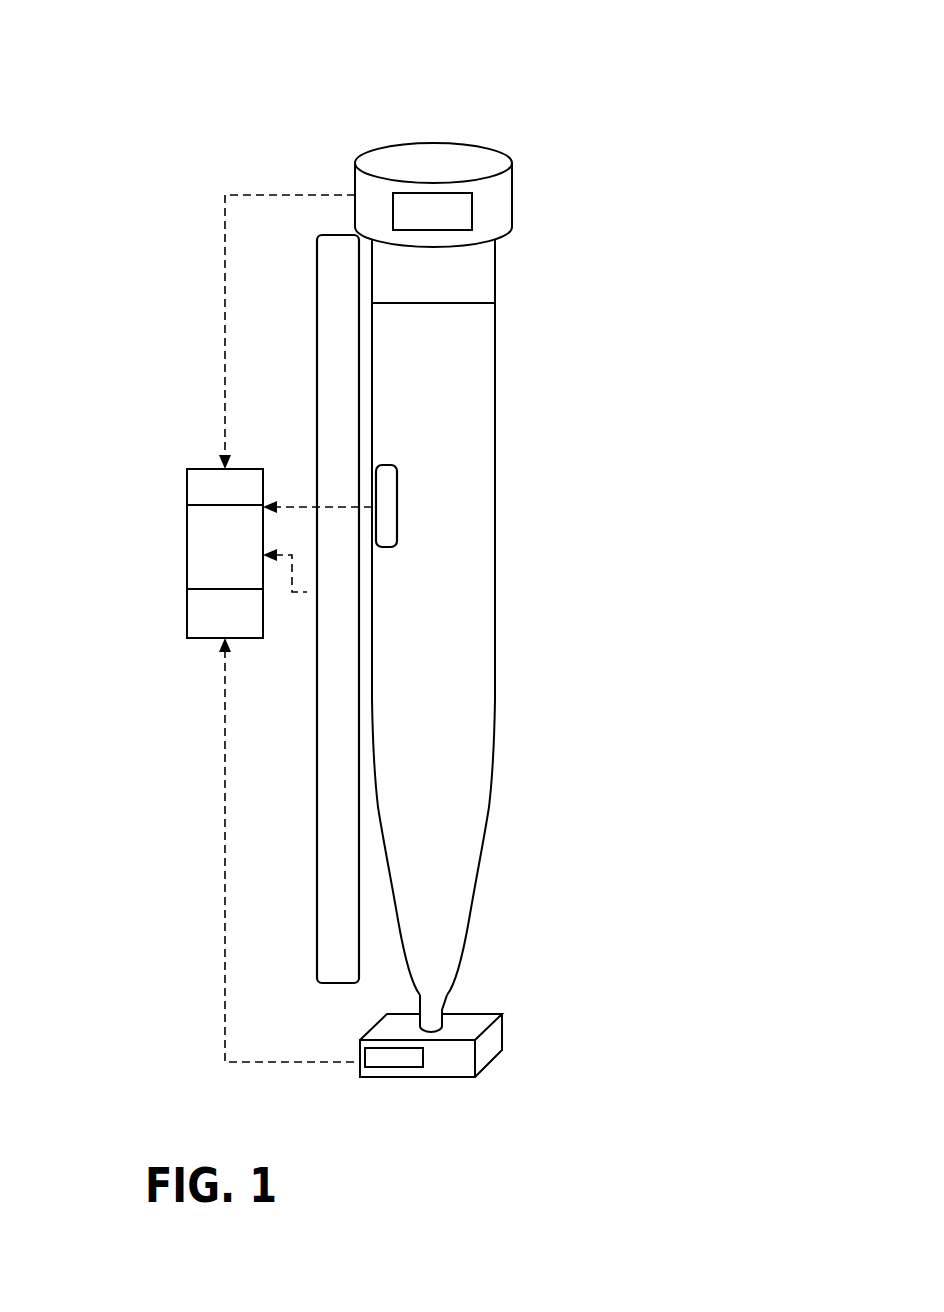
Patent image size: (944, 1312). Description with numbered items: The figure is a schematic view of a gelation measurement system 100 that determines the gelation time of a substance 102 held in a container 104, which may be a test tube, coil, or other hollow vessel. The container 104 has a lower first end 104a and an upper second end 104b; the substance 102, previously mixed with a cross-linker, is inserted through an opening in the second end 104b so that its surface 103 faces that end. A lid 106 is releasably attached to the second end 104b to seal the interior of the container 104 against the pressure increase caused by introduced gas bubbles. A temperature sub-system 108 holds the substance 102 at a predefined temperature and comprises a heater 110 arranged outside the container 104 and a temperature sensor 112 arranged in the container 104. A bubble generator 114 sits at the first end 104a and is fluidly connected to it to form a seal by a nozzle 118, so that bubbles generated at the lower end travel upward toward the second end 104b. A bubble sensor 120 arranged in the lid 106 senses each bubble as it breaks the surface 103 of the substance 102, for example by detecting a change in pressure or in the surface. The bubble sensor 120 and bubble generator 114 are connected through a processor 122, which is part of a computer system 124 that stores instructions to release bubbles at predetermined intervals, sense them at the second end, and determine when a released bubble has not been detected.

The gelation measurement system 100 is at (166, 117).
The substance 102 is at (457, 678).
The surface 103 is at (435, 308).
The container 104 is at (490, 557).
The first end 104a is at (455, 988).
The second end 104b is at (497, 275).
The lid 106 is at (512, 166).
The temperature sub-system 108 is at (257, 376).
The heater 110 is at (325, 358).
The temperature sensor 112 is at (372, 478).
The bubble generator 114 is at (488, 1036).
The nozzle 118 is at (428, 1028).
The bubble sensor 120 is at (450, 217).
The processor 122 is at (203, 577).
The computer system 124 is at (187, 472).